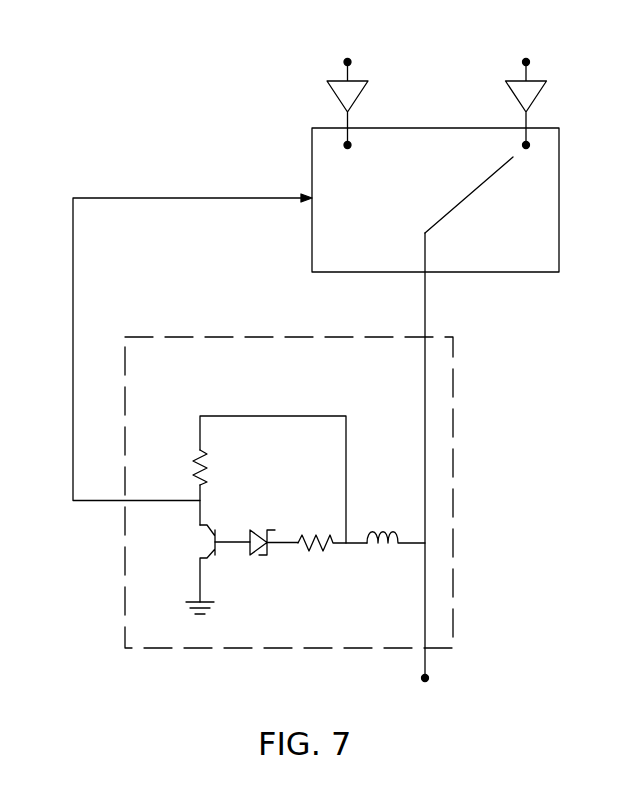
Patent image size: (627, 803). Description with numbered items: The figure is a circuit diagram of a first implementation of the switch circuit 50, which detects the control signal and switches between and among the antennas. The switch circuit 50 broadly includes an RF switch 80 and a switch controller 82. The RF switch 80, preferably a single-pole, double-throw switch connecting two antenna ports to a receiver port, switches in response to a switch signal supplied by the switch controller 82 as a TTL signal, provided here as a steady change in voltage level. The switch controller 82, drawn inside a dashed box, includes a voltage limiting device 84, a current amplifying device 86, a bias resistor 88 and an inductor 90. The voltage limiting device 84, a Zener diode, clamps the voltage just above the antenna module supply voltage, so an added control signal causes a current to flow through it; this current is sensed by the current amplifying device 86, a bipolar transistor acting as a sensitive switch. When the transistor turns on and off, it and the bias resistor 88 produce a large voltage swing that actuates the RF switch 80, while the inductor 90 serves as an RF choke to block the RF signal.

The switch circuit 50 is at (102, 127).
The RF switch 80 is at (545, 222).
The switch controller 82 is at (410, 441).
The voltage limiting device 84 is at (257, 558).
The current amplifying device 86 is at (207, 542).
The bias resistor 88 is at (185, 468).
The inductor 90 is at (382, 558).